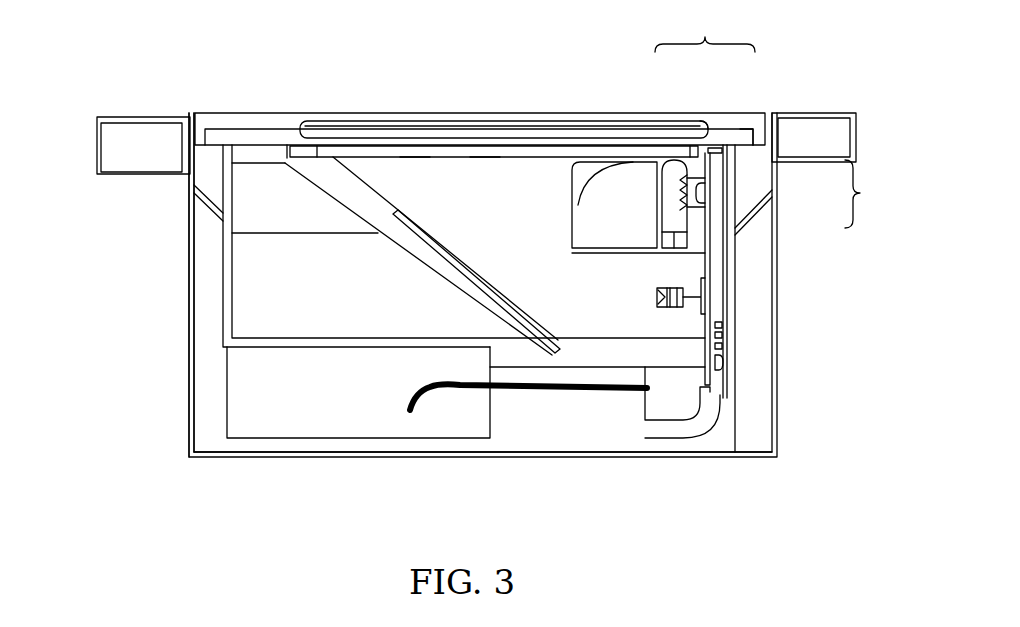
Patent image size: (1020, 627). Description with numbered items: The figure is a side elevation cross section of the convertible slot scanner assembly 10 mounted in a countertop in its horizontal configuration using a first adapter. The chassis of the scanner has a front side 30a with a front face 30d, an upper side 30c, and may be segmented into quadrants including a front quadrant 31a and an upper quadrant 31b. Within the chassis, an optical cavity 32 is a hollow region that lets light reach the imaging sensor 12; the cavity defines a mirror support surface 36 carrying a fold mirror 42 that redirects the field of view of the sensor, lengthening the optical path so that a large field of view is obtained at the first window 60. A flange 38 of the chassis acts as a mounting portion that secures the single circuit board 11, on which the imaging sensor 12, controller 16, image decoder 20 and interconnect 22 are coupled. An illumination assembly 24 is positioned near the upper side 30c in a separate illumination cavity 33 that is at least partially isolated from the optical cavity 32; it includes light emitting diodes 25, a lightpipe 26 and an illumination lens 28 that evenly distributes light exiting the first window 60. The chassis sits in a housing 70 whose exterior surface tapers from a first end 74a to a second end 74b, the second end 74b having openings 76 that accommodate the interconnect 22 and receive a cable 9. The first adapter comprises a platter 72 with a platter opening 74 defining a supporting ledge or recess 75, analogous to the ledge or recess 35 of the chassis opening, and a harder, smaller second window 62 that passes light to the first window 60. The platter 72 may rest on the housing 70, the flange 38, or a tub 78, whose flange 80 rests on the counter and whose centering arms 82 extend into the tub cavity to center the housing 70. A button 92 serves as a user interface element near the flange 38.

The convertible slot scanner assembly 10 is at (100, 388).
The first end 74a is at (120, 233).
The second end 74b is at (165, 486).
The tub 78 is at (187, 417).
The flange 80 is at (126, 117).
The front side 30a is at (196, 76).
The front face 30d is at (237, 136).
The platter 72 is at (743, 132).
The platter opening 74 is at (312, 116).
The supporting ledge or recess 75 is at (710, 130).
The flange 38 is at (261, 155).
The supporting ledge or recess 35 is at (288, 151).
The first window 60 is at (415, 148).
The second window 62 is at (483, 135).
The housing 70 is at (222, 328).
The centering arms 82 is at (205, 207).
The optical cavity 32 is at (540, 187).
The fold mirror 42 is at (422, 238).
The mirror support surface 36 is at (440, 267).
The illumination cavity 33 is at (585, 168).
The illumination lens 28 is at (633, 172).
The lightpipe 26 is at (670, 170).
The upper quadrant 31b is at (705, 33).
The front quadrant 31a is at (875, 194).
The button 92 is at (710, 162).
The upper side 30c is at (722, 392).
The illumination assembly 24 is at (728, 268).
The circuit board 11 is at (735, 283).
The light emitting diodes 25 is at (705, 192).
The imaging sensor 12 is at (707, 300).
The controller 16 is at (722, 330).
The image decoder 20 is at (690, 320).
The cable 9 is at (455, 400).
The openings 76 is at (650, 432).
The interconnect 22 is at (687, 400).